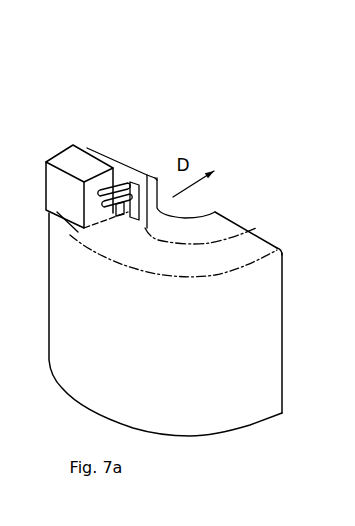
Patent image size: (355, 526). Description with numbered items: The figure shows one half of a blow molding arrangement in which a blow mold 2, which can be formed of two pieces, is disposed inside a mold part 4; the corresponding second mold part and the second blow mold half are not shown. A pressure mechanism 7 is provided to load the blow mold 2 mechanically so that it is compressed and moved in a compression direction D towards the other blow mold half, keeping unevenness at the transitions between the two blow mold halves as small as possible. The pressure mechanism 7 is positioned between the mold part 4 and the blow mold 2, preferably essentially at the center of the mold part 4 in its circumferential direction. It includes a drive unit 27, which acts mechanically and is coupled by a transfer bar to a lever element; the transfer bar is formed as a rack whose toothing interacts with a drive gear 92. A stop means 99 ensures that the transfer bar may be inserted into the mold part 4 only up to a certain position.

The blow mold 2 is at (213, 228).
The mold part 4 is at (190, 348).
The pressure mechanism 7 is at (122, 126).
The drive unit 27 is at (78, 172).
The drive gear 92 is at (128, 215).
The stop means 99 is at (258, 241).